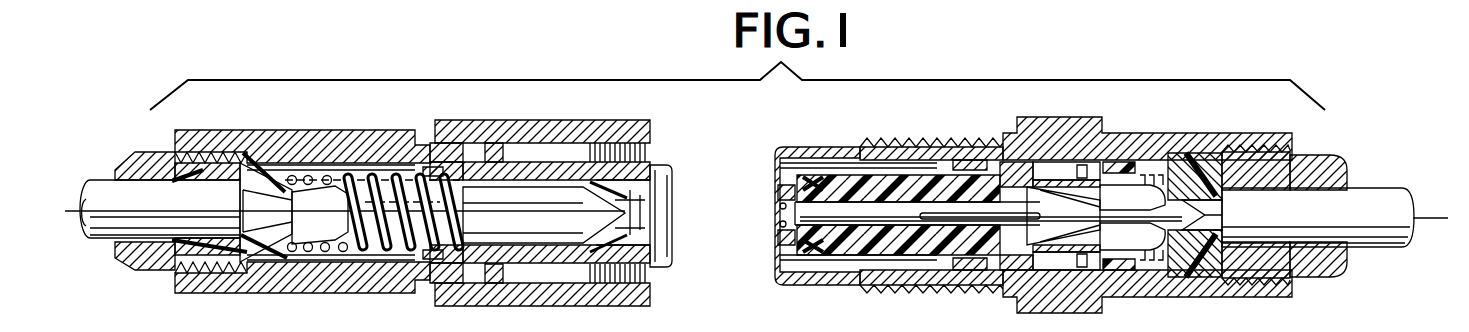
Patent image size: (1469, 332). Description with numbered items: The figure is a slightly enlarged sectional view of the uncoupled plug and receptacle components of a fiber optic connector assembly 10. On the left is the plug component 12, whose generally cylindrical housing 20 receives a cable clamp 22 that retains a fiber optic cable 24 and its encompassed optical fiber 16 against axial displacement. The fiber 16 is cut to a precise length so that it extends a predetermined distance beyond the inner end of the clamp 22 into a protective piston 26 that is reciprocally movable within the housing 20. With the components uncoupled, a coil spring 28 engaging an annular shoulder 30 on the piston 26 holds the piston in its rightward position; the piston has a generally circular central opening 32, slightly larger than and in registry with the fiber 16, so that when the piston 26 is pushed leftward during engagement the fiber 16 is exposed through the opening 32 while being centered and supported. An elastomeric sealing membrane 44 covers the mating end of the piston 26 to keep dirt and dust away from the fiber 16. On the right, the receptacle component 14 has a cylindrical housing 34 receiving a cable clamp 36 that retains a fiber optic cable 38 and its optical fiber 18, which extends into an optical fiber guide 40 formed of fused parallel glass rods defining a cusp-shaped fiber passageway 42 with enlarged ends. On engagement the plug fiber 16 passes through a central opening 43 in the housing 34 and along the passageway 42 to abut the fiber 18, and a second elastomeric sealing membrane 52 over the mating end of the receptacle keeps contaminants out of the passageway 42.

The connector assembly 10 is at (808, 138).
The plug component 12 is at (352, 160).
The receptacle component 14 is at (1128, 133).
The optical fiber 16 is at (325, 205).
The optical fiber 18 is at (973, 214).
The cylindrical housing 20 is at (198, 135).
The cable clamp 22 is at (242, 160).
The fiber optic cable 24 is at (108, 188).
The protective piston 26 is at (535, 186).
The coil spring 28 is at (400, 175).
The annular shoulder 30 is at (426, 177).
The central opening 32 is at (596, 185).
The cylindrical housing 34 is at (1197, 160).
The cable clamp 36 is at (1211, 165).
The fiber optic cable 38 is at (1360, 200).
The optical fiber guide 40 is at (945, 212).
The fiber passageway 42 is at (878, 210).
The central opening 43 is at (786, 190).
The elastomeric sealing membrane 44 is at (655, 258).
The elastomeric sealing membrane 52 is at (784, 238).